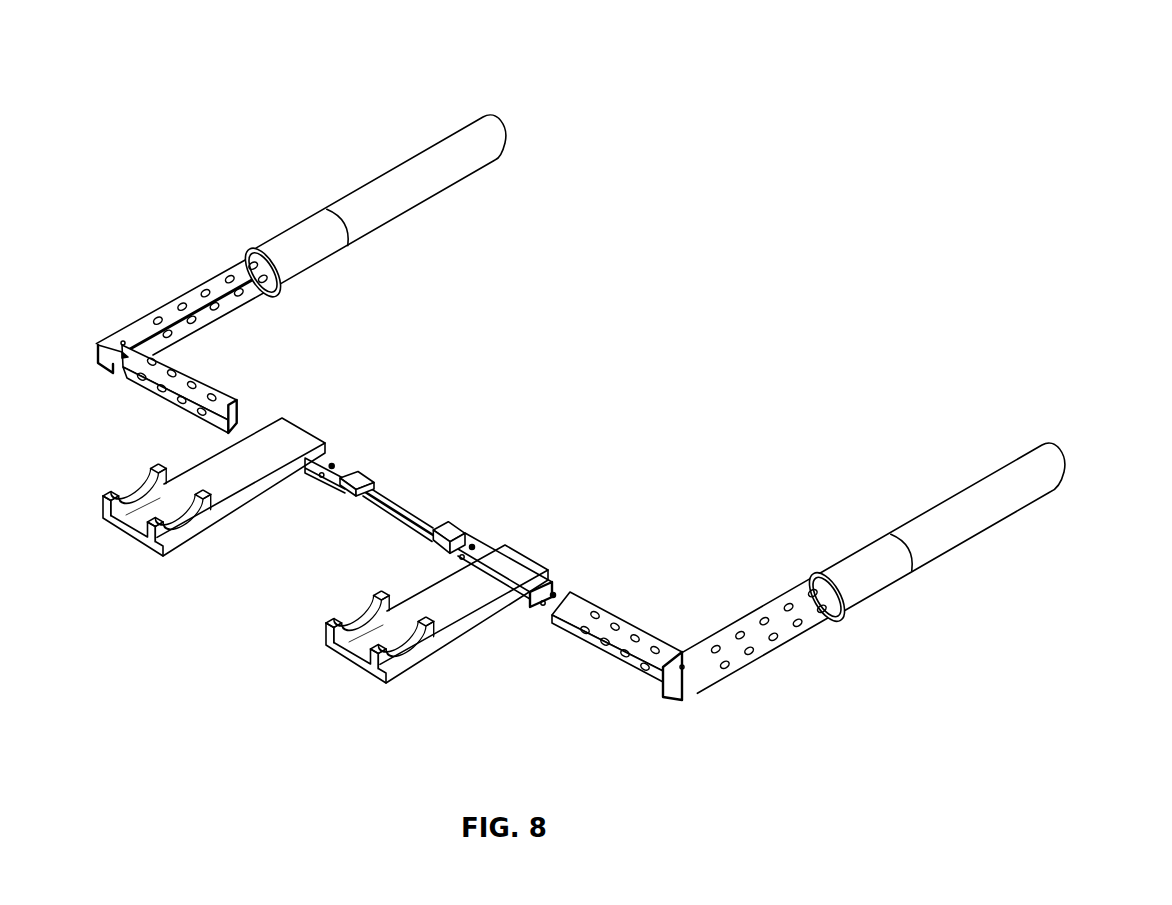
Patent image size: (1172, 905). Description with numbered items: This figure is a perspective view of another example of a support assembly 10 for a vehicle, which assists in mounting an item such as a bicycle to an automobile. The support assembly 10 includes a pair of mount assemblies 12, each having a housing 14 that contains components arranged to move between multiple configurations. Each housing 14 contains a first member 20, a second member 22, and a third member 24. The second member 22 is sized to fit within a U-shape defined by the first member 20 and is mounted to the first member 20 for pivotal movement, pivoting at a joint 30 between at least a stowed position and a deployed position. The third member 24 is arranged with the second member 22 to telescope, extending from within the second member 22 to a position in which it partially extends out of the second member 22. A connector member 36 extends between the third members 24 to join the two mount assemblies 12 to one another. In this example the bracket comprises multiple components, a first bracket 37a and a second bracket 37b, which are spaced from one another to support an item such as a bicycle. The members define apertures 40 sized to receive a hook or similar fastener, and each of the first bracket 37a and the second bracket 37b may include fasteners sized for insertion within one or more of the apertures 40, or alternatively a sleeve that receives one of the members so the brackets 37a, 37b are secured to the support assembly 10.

The support assembly 10 is at (110, 106).
The mount assembly 12 is at (500, 110).
The housing 14 is at (392, 188).
The first member 20 is at (203, 263).
The second member 22 is at (247, 403).
The third member 24 is at (360, 478).
The joint 30 is at (122, 372).
The connector member 36 is at (416, 512).
The first bracket 37a is at (158, 553).
The second bracket 37b is at (383, 683).
The apertures 40 is at (157, 320).